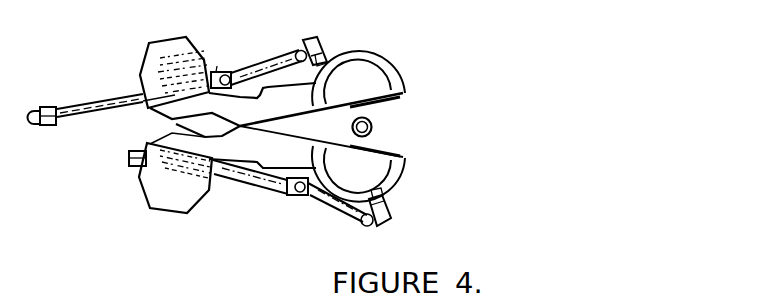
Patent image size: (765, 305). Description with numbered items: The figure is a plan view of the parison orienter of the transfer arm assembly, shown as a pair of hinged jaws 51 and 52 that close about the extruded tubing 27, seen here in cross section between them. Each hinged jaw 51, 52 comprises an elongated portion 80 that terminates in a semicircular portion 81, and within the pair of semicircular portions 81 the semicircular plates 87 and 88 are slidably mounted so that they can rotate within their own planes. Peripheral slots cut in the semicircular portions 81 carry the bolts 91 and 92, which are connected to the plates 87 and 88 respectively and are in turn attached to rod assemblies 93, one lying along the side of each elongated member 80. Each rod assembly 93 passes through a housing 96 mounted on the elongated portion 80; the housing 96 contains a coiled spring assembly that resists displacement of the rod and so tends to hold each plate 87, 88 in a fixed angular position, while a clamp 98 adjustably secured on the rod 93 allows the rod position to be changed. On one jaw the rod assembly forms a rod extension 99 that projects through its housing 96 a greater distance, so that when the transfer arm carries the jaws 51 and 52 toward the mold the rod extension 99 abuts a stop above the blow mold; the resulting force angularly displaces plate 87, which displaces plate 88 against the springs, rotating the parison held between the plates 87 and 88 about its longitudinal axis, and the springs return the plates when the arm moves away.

The extruded tubing 27 is at (375, 127).
The hinged jaw 51 is at (256, 156).
The hinged jaw 52 is at (264, 120).
The elongated portion 80 is at (176, 124).
The semicircular portion 81 is at (396, 73).
The semicircular plate 87 is at (385, 152).
The semicircular plate 88 is at (388, 101).
The bolt 91 is at (388, 201).
The bolt 92 is at (320, 56).
The rod assembly 93 is at (297, 27).
The housing 96 is at (180, 65).
The clamp 98 is at (212, 72).
The rod extension 99 is at (97, 101).